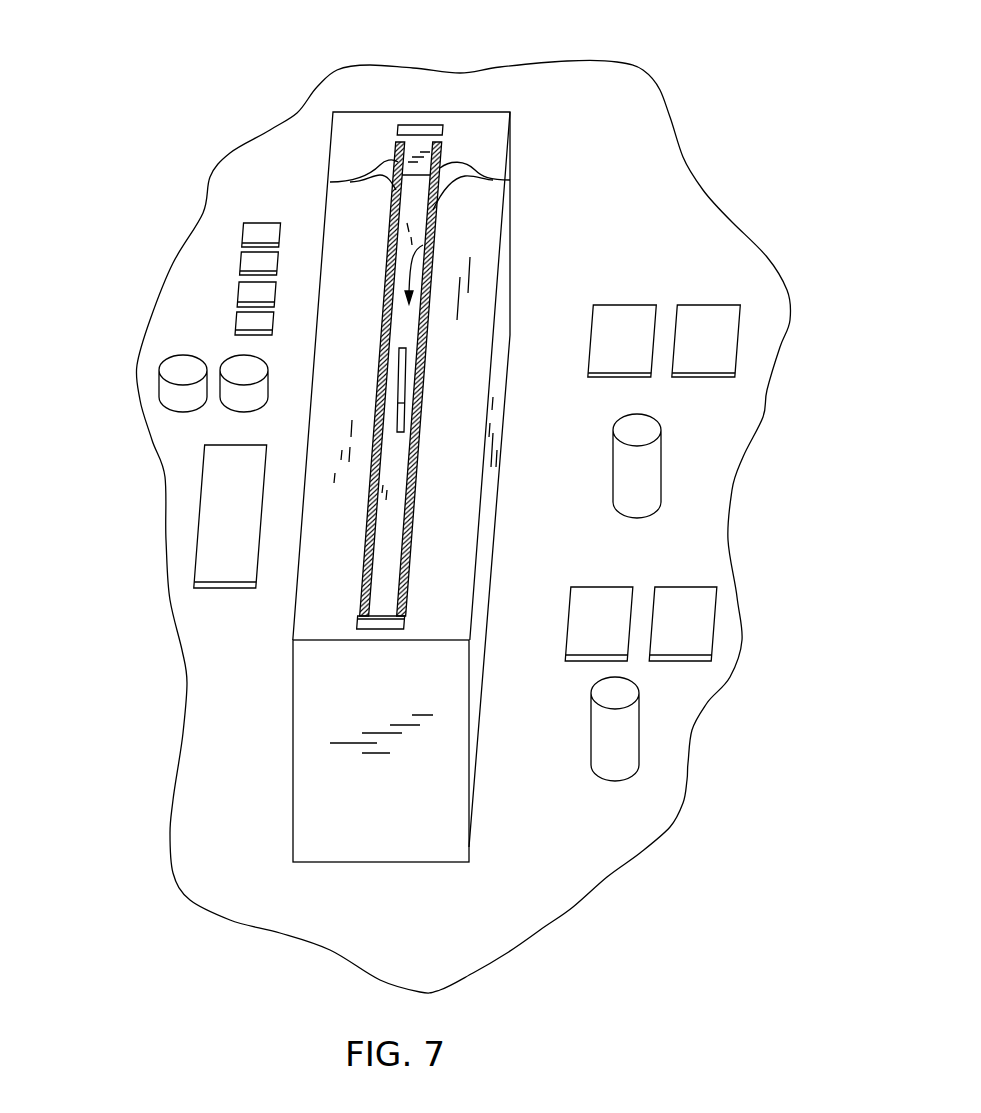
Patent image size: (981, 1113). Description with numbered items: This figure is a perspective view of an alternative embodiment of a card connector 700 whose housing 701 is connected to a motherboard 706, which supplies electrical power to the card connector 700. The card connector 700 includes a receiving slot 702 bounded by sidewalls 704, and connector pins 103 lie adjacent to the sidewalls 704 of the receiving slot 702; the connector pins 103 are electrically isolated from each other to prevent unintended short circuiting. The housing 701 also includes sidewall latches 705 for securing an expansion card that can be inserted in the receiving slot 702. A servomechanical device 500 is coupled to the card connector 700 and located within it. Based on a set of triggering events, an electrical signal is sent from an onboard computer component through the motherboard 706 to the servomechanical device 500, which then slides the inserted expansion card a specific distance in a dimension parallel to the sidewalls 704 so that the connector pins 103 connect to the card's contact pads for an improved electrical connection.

The card connector 700 is at (320, 126).
The housing 701 is at (437, 795).
The receiving slot 702 is at (435, 242).
The sidewalls 704 is at (368, 623).
The sidewall latches 705 is at (434, 130).
The motherboard 706 is at (222, 825).
The connector pins 103 is at (350, 182).
The servomechanical device 500 is at (403, 370).